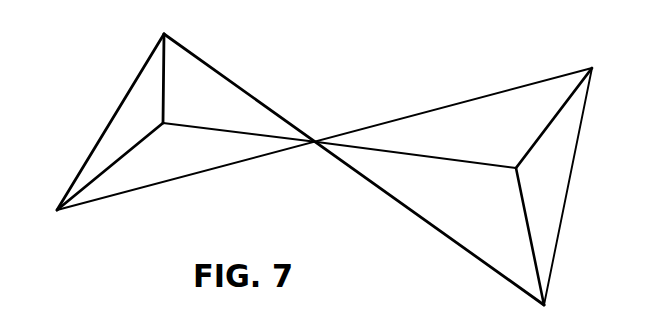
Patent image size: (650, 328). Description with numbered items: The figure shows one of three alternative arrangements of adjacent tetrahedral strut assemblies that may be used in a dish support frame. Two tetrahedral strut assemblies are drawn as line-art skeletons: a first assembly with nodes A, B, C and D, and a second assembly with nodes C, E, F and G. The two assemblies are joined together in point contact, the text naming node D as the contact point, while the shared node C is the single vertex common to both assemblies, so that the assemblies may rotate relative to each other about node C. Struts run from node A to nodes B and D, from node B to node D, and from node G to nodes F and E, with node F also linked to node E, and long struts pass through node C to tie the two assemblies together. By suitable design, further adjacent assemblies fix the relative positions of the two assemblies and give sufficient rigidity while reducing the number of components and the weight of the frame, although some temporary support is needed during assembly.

The node A is at (300, 160).
The node B is at (311, 145).
The node C is at (322, 125).
The node D is at (240, 139).
The node E is at (562, 310).
The node F is at (568, 180).
The node G is at (430, 221).